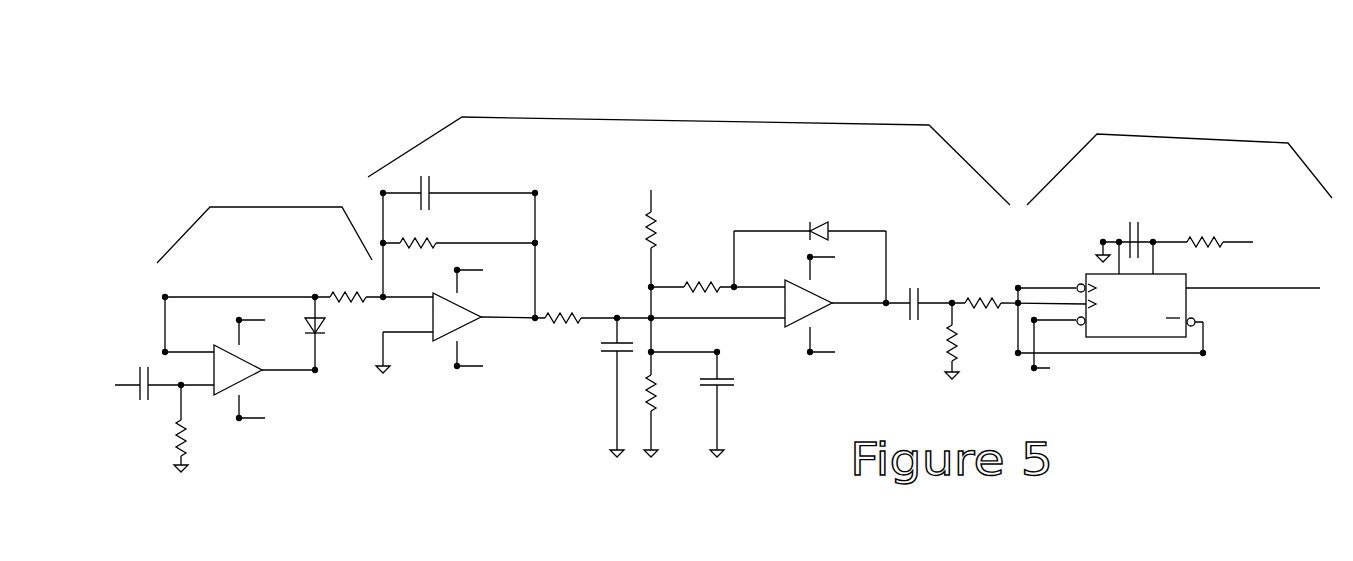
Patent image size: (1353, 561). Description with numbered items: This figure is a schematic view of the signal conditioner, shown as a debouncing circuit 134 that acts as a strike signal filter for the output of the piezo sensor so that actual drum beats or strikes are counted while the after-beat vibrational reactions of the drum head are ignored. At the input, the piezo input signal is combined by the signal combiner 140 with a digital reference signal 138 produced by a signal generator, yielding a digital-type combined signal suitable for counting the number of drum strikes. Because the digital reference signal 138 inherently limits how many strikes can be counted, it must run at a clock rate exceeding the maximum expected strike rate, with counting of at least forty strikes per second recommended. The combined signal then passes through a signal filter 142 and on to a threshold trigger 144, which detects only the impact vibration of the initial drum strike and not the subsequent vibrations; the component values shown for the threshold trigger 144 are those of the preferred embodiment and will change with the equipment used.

The debouncing circuit 134 is at (723, 286).
The digital reference signal 138 is at (133, 447).
The signal combiner 140 is at (277, 207).
The signal filter 142 is at (697, 117).
The threshold trigger 144 is at (1193, 138).